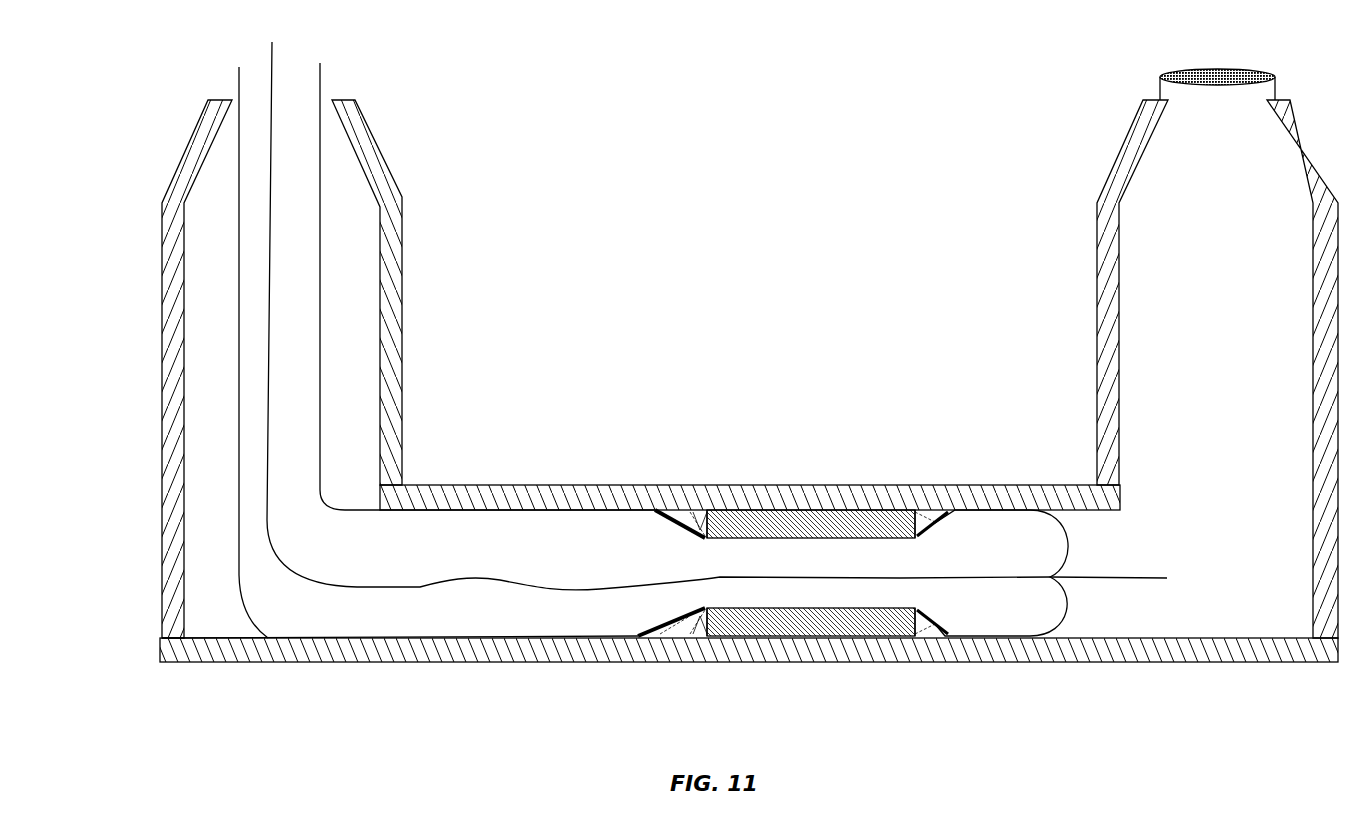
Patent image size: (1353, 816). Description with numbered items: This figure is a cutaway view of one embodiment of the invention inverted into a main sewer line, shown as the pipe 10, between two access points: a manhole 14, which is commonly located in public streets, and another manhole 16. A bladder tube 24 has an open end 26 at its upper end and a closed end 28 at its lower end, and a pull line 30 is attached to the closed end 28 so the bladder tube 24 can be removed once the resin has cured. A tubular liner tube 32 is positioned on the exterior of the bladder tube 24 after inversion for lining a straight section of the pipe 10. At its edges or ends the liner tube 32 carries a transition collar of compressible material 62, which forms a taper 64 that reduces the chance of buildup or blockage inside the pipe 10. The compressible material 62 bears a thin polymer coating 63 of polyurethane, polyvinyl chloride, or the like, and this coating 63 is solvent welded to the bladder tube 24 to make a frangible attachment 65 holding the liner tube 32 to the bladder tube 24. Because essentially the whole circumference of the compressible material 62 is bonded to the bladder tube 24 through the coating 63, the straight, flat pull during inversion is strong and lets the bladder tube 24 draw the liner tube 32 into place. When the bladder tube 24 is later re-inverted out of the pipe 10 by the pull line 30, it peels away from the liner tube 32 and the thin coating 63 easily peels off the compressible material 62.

The pipe 10 is at (1047, 500).
The manhole 14 is at (168, 252).
The manhole 16 is at (1102, 258).
The bladder tube 24 is at (527, 537).
The open end of the bladder tube 26 is at (250, 60).
The closed end of the bladder tube 28 is at (1063, 595).
The pull line 30 is at (277, 58).
The liner tube 32 is at (850, 522).
The compressible material 62 is at (712, 520).
The coating 63 is at (690, 512).
The taper 64 is at (697, 520).
The frangible attachment 65 is at (655, 510).